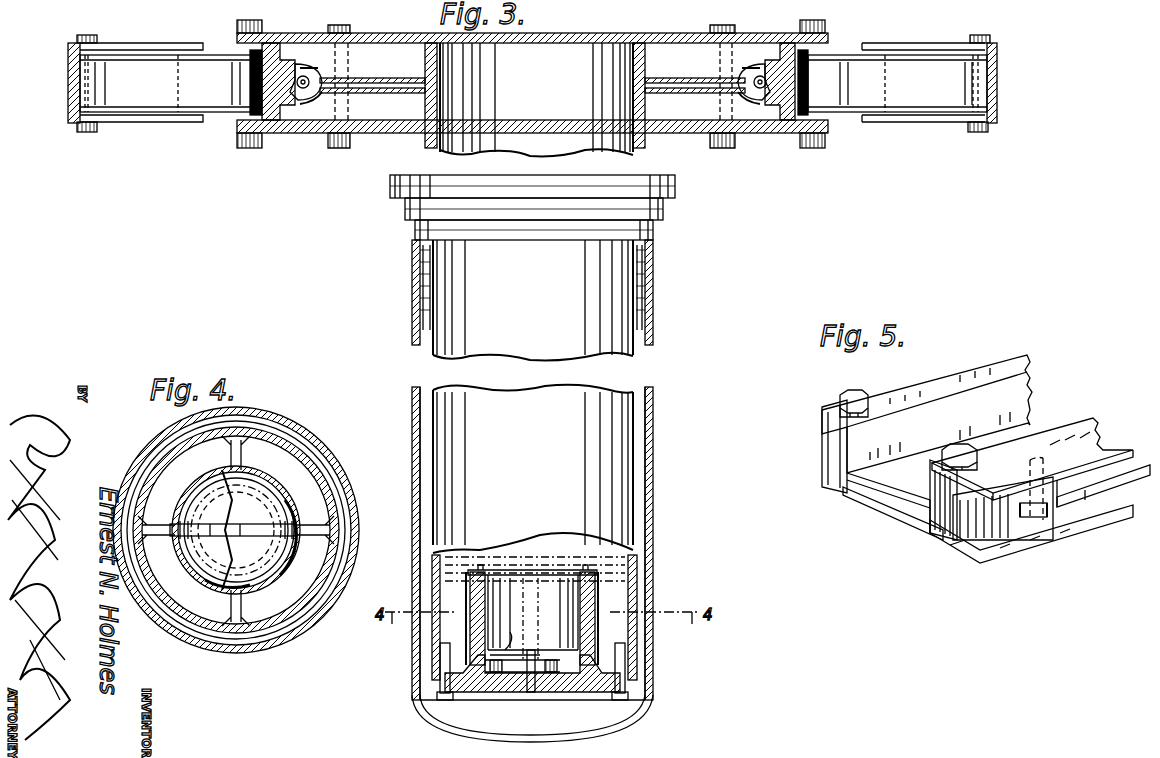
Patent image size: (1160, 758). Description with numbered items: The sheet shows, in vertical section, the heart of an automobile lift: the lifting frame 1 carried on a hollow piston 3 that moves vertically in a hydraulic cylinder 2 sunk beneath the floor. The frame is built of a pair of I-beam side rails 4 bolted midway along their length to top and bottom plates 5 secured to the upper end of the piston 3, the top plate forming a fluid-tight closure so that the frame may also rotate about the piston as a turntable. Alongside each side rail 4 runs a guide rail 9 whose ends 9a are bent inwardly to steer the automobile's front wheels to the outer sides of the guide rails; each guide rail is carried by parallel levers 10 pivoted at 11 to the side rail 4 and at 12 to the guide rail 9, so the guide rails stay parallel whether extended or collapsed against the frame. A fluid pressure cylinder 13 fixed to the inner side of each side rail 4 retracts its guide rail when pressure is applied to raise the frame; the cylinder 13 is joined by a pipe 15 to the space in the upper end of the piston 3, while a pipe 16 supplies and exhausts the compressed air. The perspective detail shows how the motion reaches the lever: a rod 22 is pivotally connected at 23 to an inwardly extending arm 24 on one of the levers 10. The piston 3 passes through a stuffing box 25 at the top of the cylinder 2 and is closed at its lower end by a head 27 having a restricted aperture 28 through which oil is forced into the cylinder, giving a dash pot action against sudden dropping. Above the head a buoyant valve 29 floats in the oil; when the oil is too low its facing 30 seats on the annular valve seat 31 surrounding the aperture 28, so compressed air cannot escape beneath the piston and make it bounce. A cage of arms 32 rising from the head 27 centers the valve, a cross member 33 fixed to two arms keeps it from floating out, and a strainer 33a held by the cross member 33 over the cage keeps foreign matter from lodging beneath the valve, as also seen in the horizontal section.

In FIG. 3, the lifting frame 1 is at (240, 113).
In FIG. 3, the hydraulic cylinder 2 is at (655, 452).
In FIG. 4, the hydraulic cylinder 2 is at (325, 458).
In FIG. 3, the piston 3 is at (640, 156).
In FIG. 4, the piston 3 is at (328, 500).
In FIG. 3, the longitudinal side rail 4 is at (285, 125).
In FIG. 5, the longitudinal side rail 4 is at (1067, 430).
In FIG. 3, the top and bottom plates 5 is at (360, 33).
In FIG. 3, the guide rail 9 is at (68, 80).
In FIG. 5, the guide rail 9 is at (953, 380).
In FIG. 3, the inclined end of guide rail 9a is at (148, 44).
In FIG. 3, the lever 10 is at (153, 96).
In FIG. 5, the lever 10 is at (890, 498).
In FIG. 3, the lever pivot on side rail 11 is at (240, 135).
In FIG. 5, the lever pivot on side rail 11 is at (958, 444).
In FIG. 3, the lever pivot on guide rail 12 is at (78, 96).
In FIG. 5, the lever pivot on guide rail 12 is at (842, 392).
In FIG. 3, the fluid pressure cylinder 13 is at (310, 102).
In FIG. 3, the pipe 15 is at (370, 78).
In FIG. 3, the air supply pipe 16 is at (305, 76).
In FIG. 5, the rod 22 is at (1097, 490).
In FIG. 5, the pivot connection 23 is at (1038, 517).
In FIG. 5, the inwardly extending arm 24 is at (990, 530).
In FIG. 3, the stuffing box 25 is at (668, 222).
In FIG. 3, the head 27 is at (586, 692).
In FIG. 4, the head 27 is at (258, 612).
In FIG. 3, the aperture 28 is at (531, 692).
In FIG. 3, the valve 29 is at (553, 580).
In FIG. 4, the valve 29 is at (236, 530).
In FIG. 3, the valve facing 30 is at (508, 645).
In FIG. 3, the valve seat 31 is at (500, 690).
In FIG. 3, the cage arm 32 is at (595, 600).
In FIG. 4, the cage arm 32 is at (272, 484).
In FIG. 3, the cross member 33 is at (528, 572).
In FIG. 4, the cross member 33 is at (198, 530).
In FIG. 3, the strainer 33a is at (605, 575).
In FIG. 4, the strainer 33a is at (268, 586).